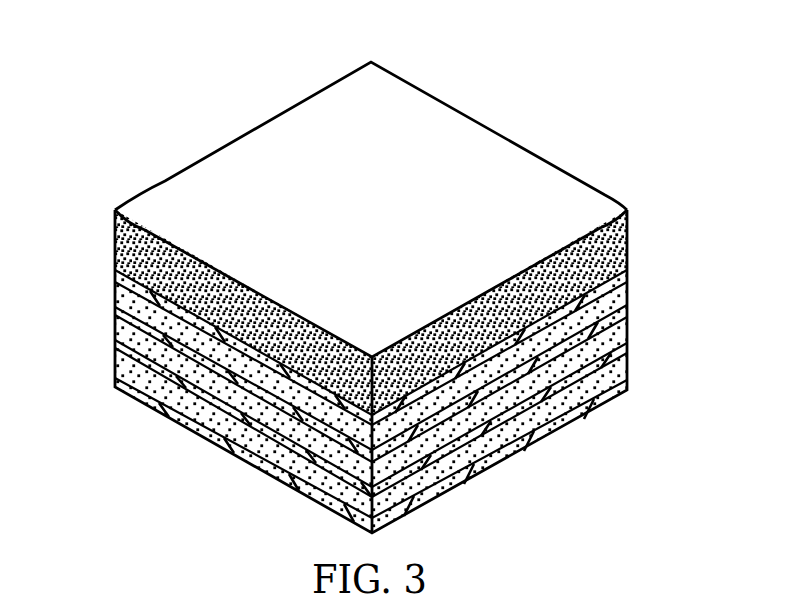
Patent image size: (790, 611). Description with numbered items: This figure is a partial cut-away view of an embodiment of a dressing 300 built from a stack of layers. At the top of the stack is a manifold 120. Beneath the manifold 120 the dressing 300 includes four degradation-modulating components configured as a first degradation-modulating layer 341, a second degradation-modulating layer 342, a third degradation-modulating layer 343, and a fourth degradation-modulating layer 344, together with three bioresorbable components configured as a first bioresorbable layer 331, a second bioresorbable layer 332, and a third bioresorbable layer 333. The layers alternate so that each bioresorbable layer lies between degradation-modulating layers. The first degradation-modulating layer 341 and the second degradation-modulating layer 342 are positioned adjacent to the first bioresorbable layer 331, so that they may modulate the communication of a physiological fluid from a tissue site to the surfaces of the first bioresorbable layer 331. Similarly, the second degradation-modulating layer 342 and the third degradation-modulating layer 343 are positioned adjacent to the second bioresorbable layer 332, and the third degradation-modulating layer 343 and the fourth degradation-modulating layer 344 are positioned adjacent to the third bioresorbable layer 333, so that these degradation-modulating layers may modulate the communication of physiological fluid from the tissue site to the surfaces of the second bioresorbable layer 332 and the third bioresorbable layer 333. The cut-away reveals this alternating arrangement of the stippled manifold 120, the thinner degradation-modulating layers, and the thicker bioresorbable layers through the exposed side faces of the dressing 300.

The dressing 300 is at (229, 106).
The manifold 120 is at (120, 240).
The fourth degradation-modulating layer 344 is at (115, 278).
The third degradation-modulating layer 343 is at (115, 313).
The second degradation-modulating layer 342 is at (115, 348).
The first degradation-modulating layer 341 is at (115, 383).
The third bioresorbable layer 333 is at (627, 295).
The second bioresorbable layer 332 is at (627, 332).
The first bioresorbable layer 331 is at (627, 367).